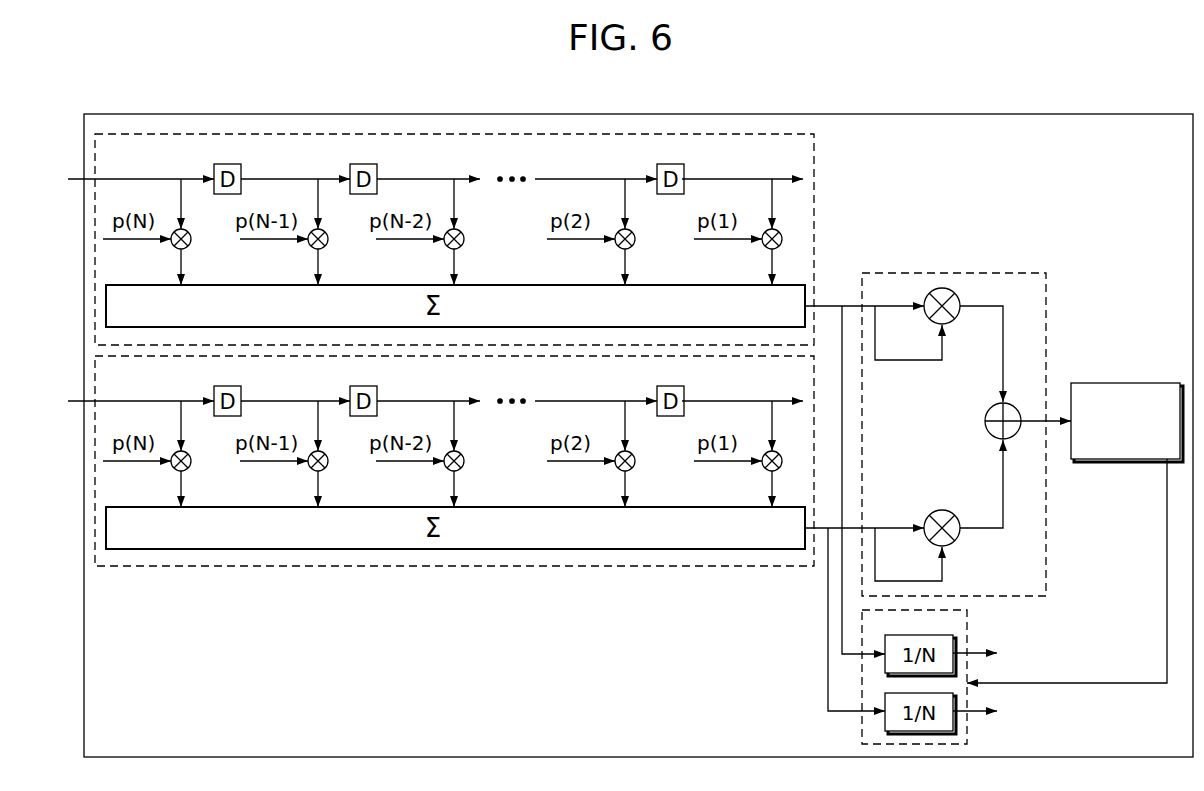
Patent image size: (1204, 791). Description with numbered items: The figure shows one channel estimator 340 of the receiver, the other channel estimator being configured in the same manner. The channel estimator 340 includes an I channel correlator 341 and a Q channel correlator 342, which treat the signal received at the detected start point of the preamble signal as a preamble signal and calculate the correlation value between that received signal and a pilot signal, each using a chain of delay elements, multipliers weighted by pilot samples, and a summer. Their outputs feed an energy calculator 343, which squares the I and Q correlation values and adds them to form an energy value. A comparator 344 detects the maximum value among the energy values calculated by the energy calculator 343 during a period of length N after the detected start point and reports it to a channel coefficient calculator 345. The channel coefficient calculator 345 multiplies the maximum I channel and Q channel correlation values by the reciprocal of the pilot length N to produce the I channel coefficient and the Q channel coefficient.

The channel estimator 340 is at (901, 114).
The I channel correlator 341 is at (815, 205).
The Q channel correlator 342 is at (472, 567).
The energy calculator 343 is at (980, 273).
The comparator 344 is at (1132, 383).
The channel coefficient calculator 345 is at (968, 622).